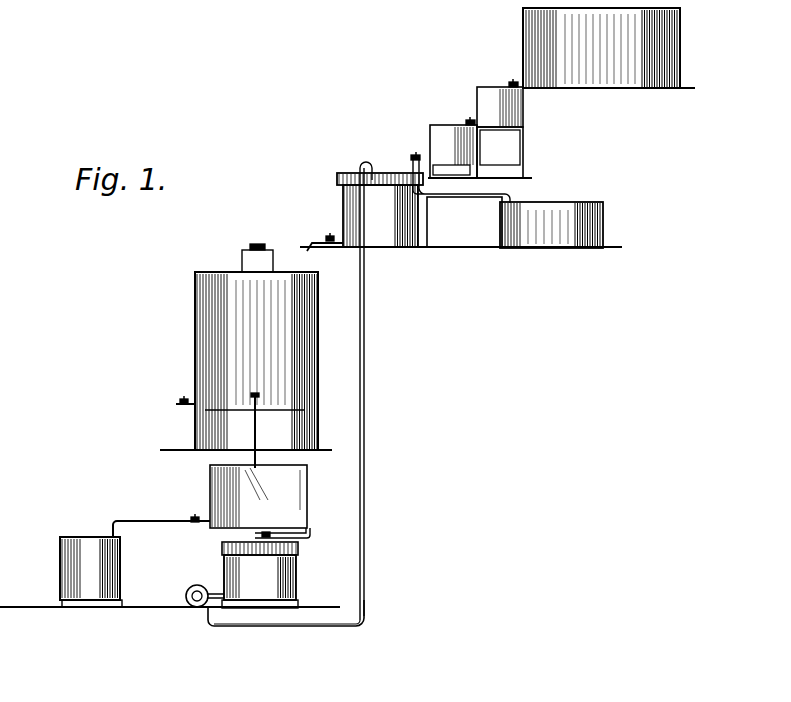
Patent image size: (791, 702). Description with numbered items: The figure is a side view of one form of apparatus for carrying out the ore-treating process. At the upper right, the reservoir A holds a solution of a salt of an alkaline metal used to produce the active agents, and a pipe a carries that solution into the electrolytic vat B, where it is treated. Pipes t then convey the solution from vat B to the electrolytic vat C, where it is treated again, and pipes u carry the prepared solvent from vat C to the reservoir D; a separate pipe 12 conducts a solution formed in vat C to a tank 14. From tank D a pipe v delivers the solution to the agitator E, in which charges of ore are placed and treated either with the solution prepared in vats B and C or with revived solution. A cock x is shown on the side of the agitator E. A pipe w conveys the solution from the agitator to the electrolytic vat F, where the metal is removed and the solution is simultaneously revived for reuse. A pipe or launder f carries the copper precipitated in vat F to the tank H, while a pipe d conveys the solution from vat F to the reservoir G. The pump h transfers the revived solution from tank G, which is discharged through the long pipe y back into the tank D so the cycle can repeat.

The reservoir A is at (601, 48).
The electrolytic vat B is at (526, 108).
The electrolytic vat C is at (448, 130).
The reservoir D is at (434, 214).
The pipe 12 is at (489, 198).
The tank 14 is at (588, 205).
The pipe a is at (513, 80).
The pipes t is at (471, 118).
The pipes u is at (414, 155).
The pipe v is at (320, 240).
The pipe y is at (366, 340).
The agitator E is at (256, 347).
The cock x is at (178, 407).
The pipe w is at (260, 436).
The electrolytic vat F is at (276, 478).
The pipe or launder f is at (177, 528).
The tank H is at (91, 572).
The reservoir G is at (260, 575).
The pump h is at (197, 585).
The pipe d is at (312, 536).